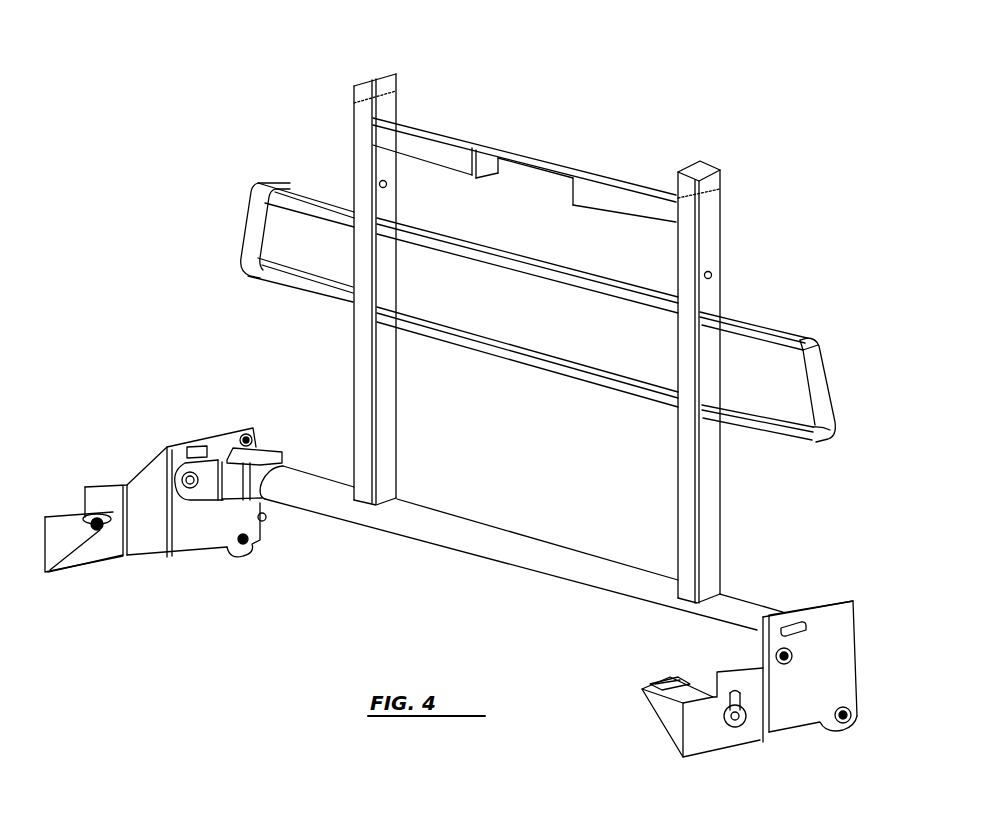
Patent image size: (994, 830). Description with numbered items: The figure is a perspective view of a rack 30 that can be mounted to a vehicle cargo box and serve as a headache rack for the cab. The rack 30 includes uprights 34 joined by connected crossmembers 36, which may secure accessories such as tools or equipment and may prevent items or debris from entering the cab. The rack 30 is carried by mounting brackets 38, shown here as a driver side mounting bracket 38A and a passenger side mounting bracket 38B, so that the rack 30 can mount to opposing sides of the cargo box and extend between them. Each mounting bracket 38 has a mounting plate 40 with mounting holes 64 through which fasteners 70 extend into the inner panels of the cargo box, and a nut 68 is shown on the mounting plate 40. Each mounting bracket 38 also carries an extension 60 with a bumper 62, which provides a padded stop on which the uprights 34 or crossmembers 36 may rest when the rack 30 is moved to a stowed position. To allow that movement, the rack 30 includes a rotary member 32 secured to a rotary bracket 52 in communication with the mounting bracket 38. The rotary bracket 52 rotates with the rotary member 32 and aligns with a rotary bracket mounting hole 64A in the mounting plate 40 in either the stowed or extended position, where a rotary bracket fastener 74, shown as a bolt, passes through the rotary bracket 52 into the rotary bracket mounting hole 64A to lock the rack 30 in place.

The rack 30 is at (287, 128).
The rotary member 32 is at (497, 540).
The upright 34 is at (387, 442).
The crossmember 36 is at (440, 148).
The mounting bracket 38 is at (476, 587).
The driver side mounting bracket 38A is at (168, 436).
The passenger side mounting bracket 38B is at (853, 603).
The mounting plate 40 is at (188, 540).
The rotary bracket 52 is at (233, 485).
The extension of the mounting bracket 60 is at (62, 538).
The bumper 62 is at (97, 517).
The mounting hole of the mounting bracket 64 is at (843, 613).
The rotary bracket mounting hole 64A is at (248, 546).
The nut 68 is at (793, 656).
The mounting bracket fastener 70 is at (248, 435).
The rotary bracket fastener 74 is at (190, 483).